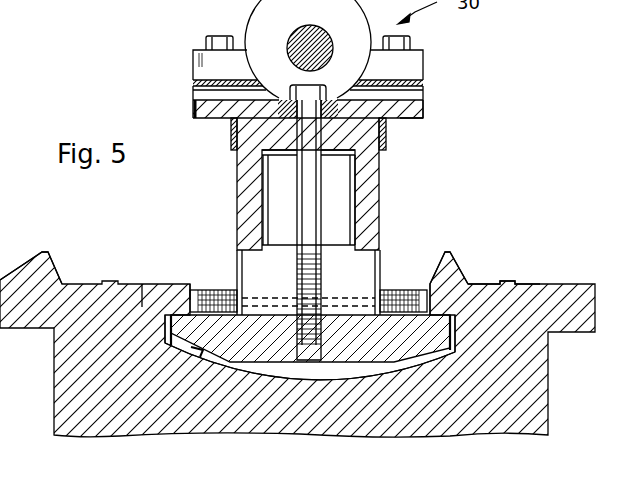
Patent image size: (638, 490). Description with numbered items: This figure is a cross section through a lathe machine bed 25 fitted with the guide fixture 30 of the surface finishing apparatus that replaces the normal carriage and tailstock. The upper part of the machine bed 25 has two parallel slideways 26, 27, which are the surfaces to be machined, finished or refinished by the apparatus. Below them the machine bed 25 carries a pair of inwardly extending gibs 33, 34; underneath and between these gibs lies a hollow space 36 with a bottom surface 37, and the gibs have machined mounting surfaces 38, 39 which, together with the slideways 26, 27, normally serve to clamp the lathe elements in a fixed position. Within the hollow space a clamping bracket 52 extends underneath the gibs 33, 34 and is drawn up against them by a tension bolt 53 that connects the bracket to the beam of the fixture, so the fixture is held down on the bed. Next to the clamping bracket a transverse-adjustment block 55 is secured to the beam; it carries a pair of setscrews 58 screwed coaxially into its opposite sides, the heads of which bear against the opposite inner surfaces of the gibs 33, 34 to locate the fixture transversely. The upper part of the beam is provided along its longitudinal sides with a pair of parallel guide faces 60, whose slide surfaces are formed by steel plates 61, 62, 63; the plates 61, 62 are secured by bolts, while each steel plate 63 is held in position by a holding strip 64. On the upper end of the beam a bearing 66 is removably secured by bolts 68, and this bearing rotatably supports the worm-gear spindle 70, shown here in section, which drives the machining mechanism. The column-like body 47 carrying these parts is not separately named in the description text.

The machine bed 25 is at (533, 398).
The slideway 26 is at (43, 248).
The slideway 27 is at (507, 283).
The guide fixture 30 is at (428, 350).
The gib 33 is at (180, 287).
The gib 34 is at (440, 290).
The hollow space 36 is at (416, 12).
The bottom surface 37 is at (200, 353).
The mounting surface 38 is at (162, 333).
The mounting surface 39 is at (460, 330).
The column body 47 is at (378, 180).
The clamping bracket 52 is at (258, 352).
The tension bolt 53 is at (312, 215).
The transverse-adjustment block 55 is at (238, 257).
The setscrew 58 is at (215, 290).
The guide face 60 is at (208, 108).
The steel plate 61 is at (422, 82).
The steel plate 62 is at (423, 113).
The steel plate 63 is at (405, 121).
The holding strip 64 is at (388, 143).
The bearing 66 is at (195, 65).
The bolt 68 is at (208, 43).
The worm-gear spindle 70 is at (318, 45).